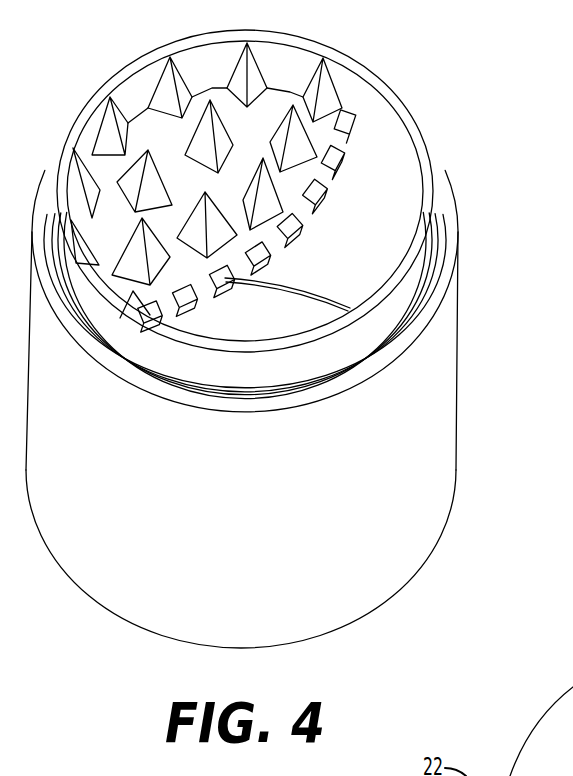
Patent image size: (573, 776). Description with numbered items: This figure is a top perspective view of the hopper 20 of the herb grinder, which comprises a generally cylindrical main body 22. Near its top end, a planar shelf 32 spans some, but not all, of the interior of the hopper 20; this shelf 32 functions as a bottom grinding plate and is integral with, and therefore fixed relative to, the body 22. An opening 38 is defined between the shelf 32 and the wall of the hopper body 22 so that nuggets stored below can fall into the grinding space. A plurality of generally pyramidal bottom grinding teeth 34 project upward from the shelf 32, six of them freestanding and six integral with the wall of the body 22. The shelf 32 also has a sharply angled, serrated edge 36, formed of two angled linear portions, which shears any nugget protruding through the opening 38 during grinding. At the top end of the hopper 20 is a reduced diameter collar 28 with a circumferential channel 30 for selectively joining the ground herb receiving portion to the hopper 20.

The hopper 20 is at (284, 328).
The main body 22 is at (445, 463).
The reduced diameter collar 28 is at (428, 256).
The circumferential channel 30 is at (412, 314).
The shelf 32 is at (148, 127).
The bottom grinding teeth 34 is at (152, 178).
The edge 36 is at (338, 157).
The opening 38 is at (380, 203).